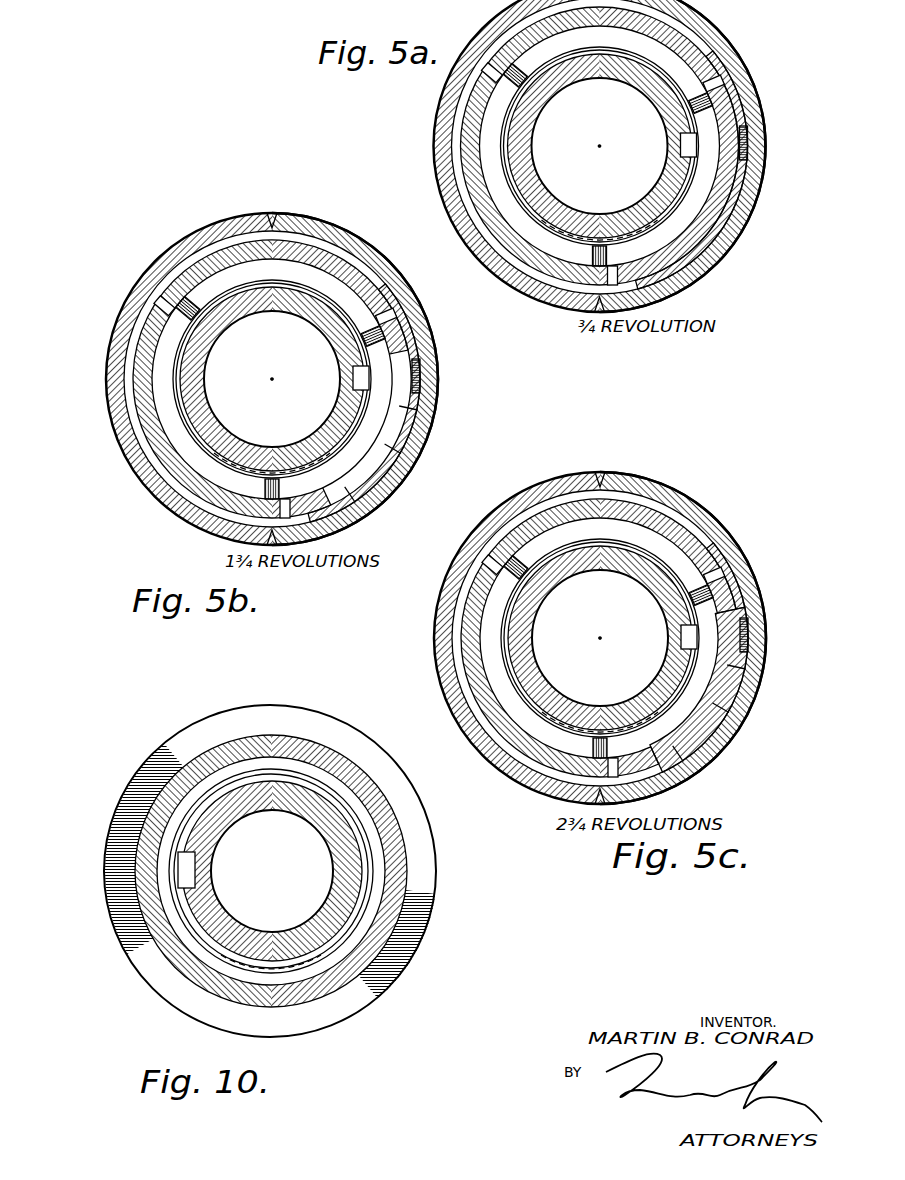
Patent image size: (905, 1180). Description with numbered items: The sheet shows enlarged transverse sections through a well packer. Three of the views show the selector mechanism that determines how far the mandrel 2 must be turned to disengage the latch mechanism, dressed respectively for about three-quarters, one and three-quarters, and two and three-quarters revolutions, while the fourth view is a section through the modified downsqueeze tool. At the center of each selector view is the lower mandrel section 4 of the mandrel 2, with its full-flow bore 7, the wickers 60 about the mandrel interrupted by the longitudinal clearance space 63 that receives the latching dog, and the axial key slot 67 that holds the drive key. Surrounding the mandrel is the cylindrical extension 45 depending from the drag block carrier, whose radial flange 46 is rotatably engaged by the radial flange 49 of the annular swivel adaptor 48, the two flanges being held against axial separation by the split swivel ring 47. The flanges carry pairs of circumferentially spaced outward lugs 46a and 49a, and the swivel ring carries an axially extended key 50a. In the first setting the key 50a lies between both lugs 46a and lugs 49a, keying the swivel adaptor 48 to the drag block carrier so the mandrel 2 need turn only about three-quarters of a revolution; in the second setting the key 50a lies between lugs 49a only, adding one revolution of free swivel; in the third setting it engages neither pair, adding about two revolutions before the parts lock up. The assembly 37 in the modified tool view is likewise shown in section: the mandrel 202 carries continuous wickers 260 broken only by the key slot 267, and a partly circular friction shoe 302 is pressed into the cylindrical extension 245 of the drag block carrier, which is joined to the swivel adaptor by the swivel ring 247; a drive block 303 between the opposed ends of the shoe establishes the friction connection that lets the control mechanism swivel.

In FIG. 5A, the mandrel 2 is at (577, 203).
In FIG. 5B, the mandrel 2 is at (279, 437).
In FIG. 5C, the mandrel 2 is at (550, 603).
In FIG. 5A, the lower mandrel section 4 is at (648, 86).
In FIG. 5B, the lower mandrel section 4 is at (283, 305).
In FIG. 5C, the lower mandrel section 4 is at (652, 578).
In FIG. 5A, the bore 7 is at (552, 101).
In FIG. 5B, the bore 7 is at (215, 407).
In FIG. 5C, the bore 7 is at (543, 687).
In FIG. 5A, the coupling assembly 37 is at (726, 270).
In FIG. 5B, the coupling assembly 37 is at (446, 388).
In FIG. 5C, the coupling assembly 37 is at (691, 487).
In FIG. 5A, the cylindrical extension 45 is at (687, 42).
In FIG. 5B, the cylindrical extension 45 is at (323, 250).
In FIG. 5C, the cylindrical extension 45 is at (683, 555).
In FIG. 5A, the radial flange 46 is at (708, 230).
In FIG. 5B, the radial flange 46 is at (270, 379).
In FIG. 5C, the radial flange 46 is at (730, 580).
In FIG. 5A, the lugs 46a is at (737, 102).
In FIG. 5B, the lugs 46a is at (391, 298).
In FIG. 5C, the lugs 46a is at (712, 546).
In FIG. 5A, the split swivel ring 47 is at (720, 48).
In FIG. 5B, the split swivel ring 47 is at (360, 262).
In FIG. 5C, the split swivel ring 47 is at (644, 488).
In FIG. 5B, the swivel adaptor 48 is at (348, 494).
In FIG. 5C, the swivel adaptor 48 is at (684, 749).
In FIG. 5A, the radial flange 49 is at (692, 170).
In FIG. 5B, the radial flange 49 is at (385, 465).
In FIG. 5C, the radial flange 49 is at (534, 768).
In FIG. 5B, the lugs 49a is at (420, 363).
In FIG. 5C, the lugs 49a is at (751, 671).
In FIG. 5A, the key 50a is at (742, 142).
In FIG. 5B, the key 50a is at (418, 369).
In FIG. 5C, the key 50a is at (755, 633).
In FIG. 5A, the wickers 60 is at (502, 152).
In FIG. 5B, the wickers 60 is at (175, 386).
In FIG. 5C, the wickers 60 is at (503, 646).
In FIG. 5A, the clearance space 63 is at (505, 172).
In FIG. 5B, the clearance space 63 is at (178, 400).
In FIG. 5C, the clearance space 63 is at (510, 661).
In FIG. 5A, the key slot 67 is at (679, 144).
In FIG. 5B, the key slot 67 is at (346, 378).
In FIG. 5C, the key slot 67 is at (680, 641).
In FIG. 10, the mandrel 202 is at (228, 909).
In FIG. 10, the cylindrical extension 245 is at (145, 902).
In FIG. 10, the swivel ring 247 is at (137, 790).
In FIG. 10, the wickers 260 is at (225, 788).
In FIG. 10, the key slot 267 is at (188, 866).
In FIG. 10, the friction shoe 302 is at (330, 967).
In FIG. 10, the drive block 303 is at (160, 866).